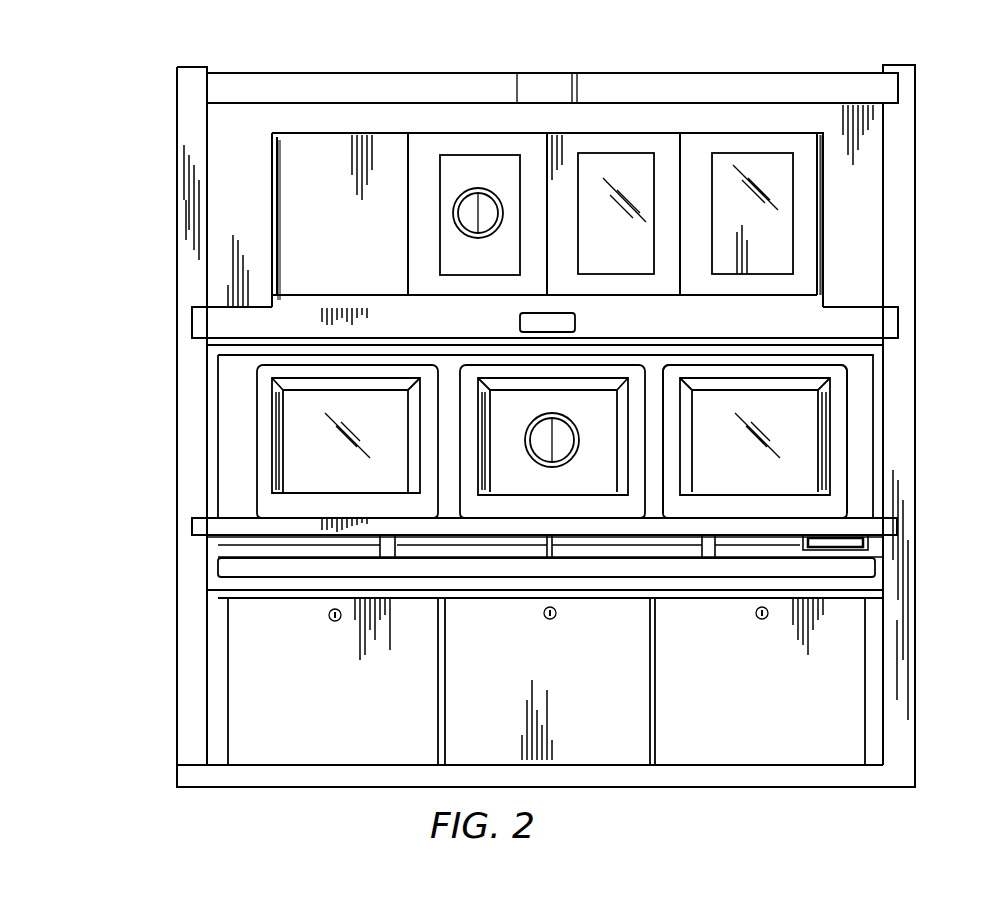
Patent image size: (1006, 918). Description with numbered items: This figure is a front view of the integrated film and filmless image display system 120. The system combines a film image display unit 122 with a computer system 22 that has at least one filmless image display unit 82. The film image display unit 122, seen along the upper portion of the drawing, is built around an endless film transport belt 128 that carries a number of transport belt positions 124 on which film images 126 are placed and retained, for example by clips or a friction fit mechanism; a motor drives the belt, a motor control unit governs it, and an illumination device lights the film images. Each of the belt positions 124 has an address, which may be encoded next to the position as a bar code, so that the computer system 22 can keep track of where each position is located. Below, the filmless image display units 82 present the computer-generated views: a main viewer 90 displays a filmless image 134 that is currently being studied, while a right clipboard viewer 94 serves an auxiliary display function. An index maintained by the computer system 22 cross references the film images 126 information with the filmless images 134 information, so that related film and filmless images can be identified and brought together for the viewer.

The computer system 22 is at (895, 481).
The filmless image display unit 82 is at (263, 470).
The main viewer 90 is at (588, 503).
The right clipboard viewer 94 is at (838, 425).
The integrated film and filmless image display system 120 is at (797, 67).
The film image display unit 122 is at (930, 233).
The transport belt positions 124 is at (333, 148).
The film images 126 is at (592, 172).
The endless film transport belt 128 is at (293, 170).
The filmless image 134 is at (515, 483).